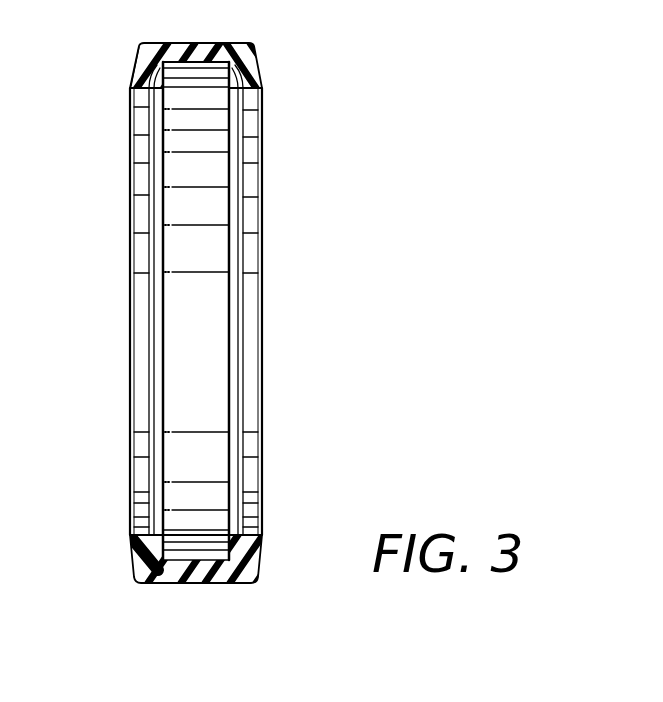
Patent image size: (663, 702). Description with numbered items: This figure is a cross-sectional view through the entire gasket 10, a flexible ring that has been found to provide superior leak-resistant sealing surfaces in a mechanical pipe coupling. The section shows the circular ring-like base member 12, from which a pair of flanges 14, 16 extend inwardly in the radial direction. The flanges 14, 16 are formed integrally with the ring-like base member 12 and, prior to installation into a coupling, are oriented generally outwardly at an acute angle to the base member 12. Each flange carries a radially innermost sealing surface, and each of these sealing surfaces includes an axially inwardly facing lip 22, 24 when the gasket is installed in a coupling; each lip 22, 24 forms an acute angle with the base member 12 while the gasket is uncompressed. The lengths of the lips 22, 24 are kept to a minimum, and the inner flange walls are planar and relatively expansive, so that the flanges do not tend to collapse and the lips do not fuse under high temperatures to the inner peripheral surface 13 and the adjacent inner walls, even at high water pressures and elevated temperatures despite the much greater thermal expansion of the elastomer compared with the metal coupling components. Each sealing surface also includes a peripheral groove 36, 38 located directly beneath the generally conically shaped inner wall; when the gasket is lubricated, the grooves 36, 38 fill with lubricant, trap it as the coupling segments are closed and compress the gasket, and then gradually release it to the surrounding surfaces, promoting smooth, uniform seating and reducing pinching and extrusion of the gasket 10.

The gasket 10 is at (266, 63).
The ring-like base member 12 is at (150, 43).
The inner peripheral surface 13 is at (236, 68).
The flange 14 is at (137, 63).
The flange 16 is at (263, 78).
The lip 22 is at (168, 85).
The lip 24 is at (233, 103).
The peripheral groove 36 is at (157, 113).
The peripheral groove 38 is at (253, 113).